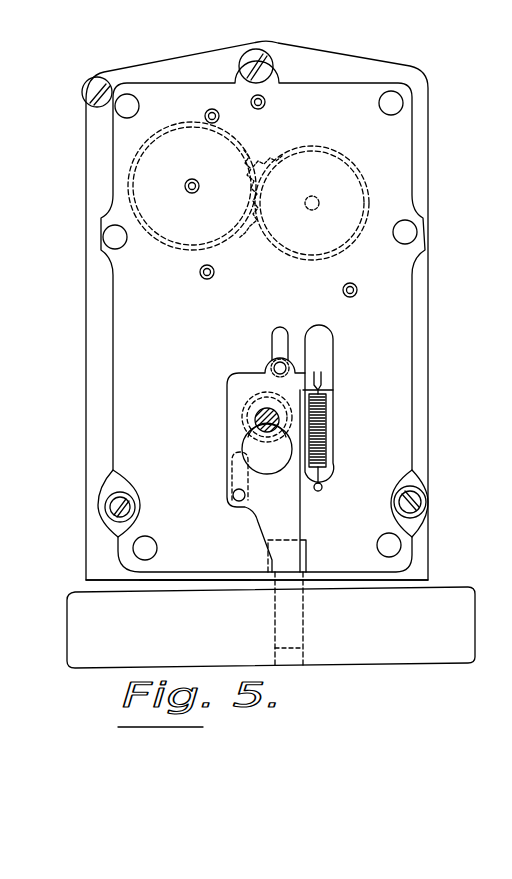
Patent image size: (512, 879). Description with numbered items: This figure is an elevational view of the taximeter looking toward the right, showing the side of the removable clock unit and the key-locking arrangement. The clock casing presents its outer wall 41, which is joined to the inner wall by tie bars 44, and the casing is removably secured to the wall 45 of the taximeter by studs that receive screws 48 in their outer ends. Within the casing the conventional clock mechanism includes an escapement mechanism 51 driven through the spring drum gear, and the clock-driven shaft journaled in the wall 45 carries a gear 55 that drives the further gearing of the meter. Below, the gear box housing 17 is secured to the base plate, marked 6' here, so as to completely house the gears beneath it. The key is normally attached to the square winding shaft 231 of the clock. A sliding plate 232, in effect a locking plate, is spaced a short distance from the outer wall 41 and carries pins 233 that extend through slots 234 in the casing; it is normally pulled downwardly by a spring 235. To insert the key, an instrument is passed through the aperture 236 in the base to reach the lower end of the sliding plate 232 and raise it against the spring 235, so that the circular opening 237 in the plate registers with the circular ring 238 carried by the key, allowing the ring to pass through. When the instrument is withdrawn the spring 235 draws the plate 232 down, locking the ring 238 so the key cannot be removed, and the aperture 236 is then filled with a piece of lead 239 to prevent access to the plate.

The screws 48 is at (270, 70).
The gear 55 is at (323, 141).
The escapement mechanism 51 is at (179, 252).
The outer wall 41 is at (255, 320).
The wall 45 is at (430, 333).
The tie bars 44 is at (377, 546).
The gear box housing 17 is at (271, 627).
The plate edge 6' is at (195, 597).
The square winding shaft 231 is at (255, 420).
The sliding plate 232 is at (286, 481).
The pins 233 is at (272, 366).
The slots 234 is at (281, 332).
The spring 235 is at (323, 444).
The aperture 236 is at (304, 622).
The circular opening 237 is at (245, 447).
The circular ring 238 is at (267, 448).
The piece of lead 239 is at (276, 659).